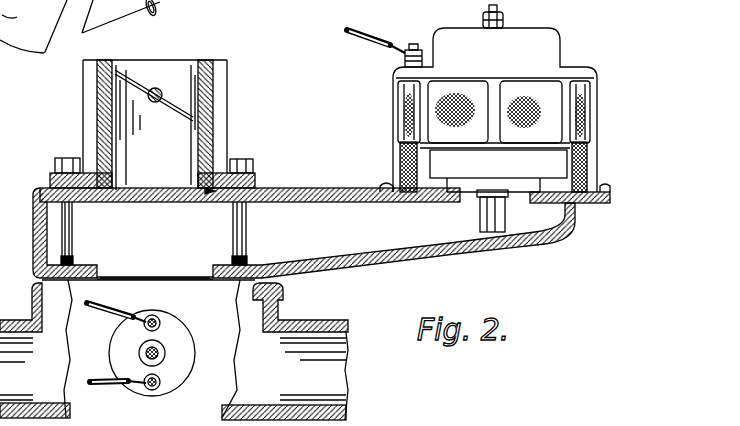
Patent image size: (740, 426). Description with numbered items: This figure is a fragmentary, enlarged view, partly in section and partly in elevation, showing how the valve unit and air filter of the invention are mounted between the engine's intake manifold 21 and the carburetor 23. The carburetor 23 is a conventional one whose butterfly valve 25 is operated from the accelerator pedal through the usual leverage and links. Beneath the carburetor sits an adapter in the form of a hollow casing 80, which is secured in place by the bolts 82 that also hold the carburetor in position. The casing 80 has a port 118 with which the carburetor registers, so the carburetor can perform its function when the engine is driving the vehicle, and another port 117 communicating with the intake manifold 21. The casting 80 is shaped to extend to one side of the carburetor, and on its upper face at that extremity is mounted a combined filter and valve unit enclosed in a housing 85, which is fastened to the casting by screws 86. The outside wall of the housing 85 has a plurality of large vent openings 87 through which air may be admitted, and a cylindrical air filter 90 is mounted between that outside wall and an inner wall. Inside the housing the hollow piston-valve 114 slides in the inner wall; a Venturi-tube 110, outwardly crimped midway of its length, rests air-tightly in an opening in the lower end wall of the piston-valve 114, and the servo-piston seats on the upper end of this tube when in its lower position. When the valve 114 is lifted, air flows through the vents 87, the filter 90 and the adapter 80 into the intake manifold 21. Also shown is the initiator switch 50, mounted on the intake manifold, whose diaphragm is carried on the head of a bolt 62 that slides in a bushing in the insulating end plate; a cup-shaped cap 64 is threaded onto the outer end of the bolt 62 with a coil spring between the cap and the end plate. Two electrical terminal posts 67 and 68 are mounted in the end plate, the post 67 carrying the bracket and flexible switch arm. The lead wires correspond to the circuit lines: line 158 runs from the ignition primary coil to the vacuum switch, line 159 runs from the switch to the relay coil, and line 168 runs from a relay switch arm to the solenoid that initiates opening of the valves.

The intake manifold 21 is at (302, 322).
The carburetor 23 is at (220, 100).
The butterfly valve 25 is at (182, 110).
The initiator switch 50 is at (185, 333).
The bolt 62 is at (163, 353).
The cup-shaped cap 64 is at (144, 353).
The electrical terminal post 67 is at (157, 323).
The electrical terminal post 68 is at (157, 385).
The hollow casing 80 is at (320, 190).
The bolts 82 is at (250, 166).
The housing 85 is at (550, 58).
The screws 86 is at (387, 182).
The vent openings 87 is at (518, 92).
The cylindrical air filter 90 is at (582, 163).
The Venturi-tube 110 is at (490, 208).
The hollow piston-valve 114 is at (440, 160).
The port 117 is at (158, 273).
The port 118 is at (172, 192).
The line 158 is at (107, 386).
The line 159 is at (103, 303).
The line 168 is at (372, 33).